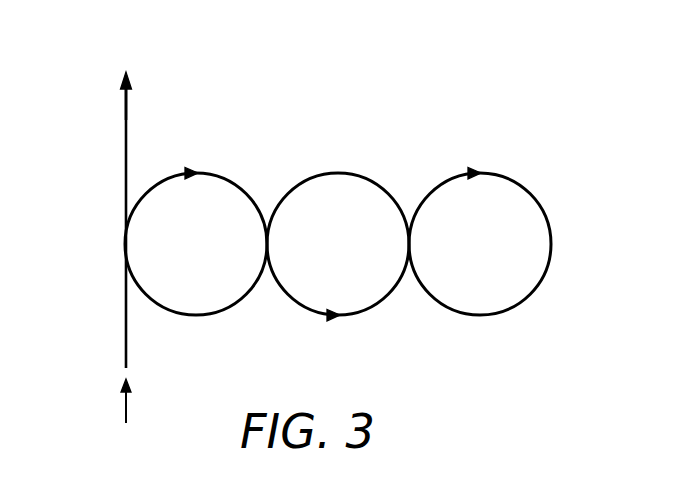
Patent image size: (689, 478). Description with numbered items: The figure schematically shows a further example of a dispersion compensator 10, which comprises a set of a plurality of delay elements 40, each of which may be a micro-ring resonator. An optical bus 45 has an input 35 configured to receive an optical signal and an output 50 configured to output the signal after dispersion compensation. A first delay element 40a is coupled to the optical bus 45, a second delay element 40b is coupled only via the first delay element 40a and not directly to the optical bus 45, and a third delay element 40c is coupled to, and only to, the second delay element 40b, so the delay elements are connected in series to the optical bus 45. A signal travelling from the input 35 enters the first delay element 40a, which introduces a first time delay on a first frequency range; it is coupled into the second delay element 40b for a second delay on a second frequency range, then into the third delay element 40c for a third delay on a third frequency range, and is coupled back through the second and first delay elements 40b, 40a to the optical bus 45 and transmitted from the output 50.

The dispersion compensator 10 is at (442, 100).
The input 35 is at (126, 402).
The delay elements 40 is at (342, 241).
The first delay element 40a is at (232, 308).
The second delay element 40b is at (375, 307).
The third delay element 40c is at (517, 307).
The optical bus 45 is at (126, 322).
The output 50 is at (126, 100).